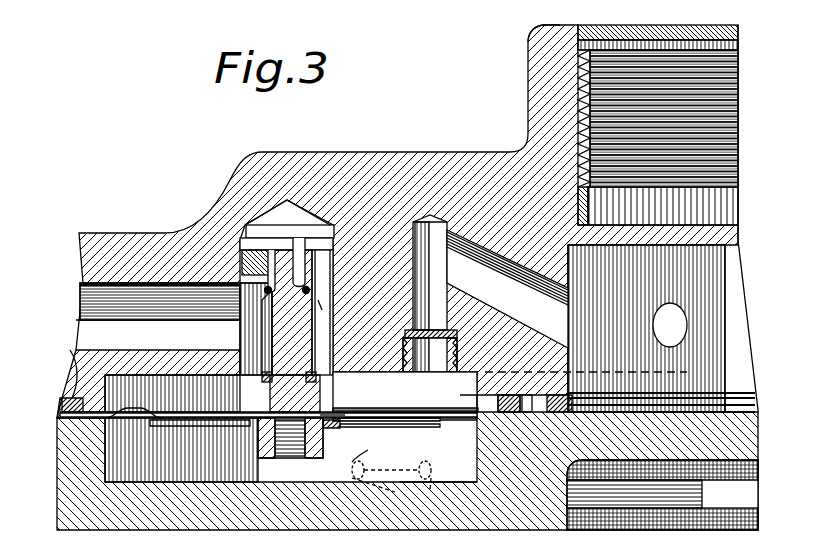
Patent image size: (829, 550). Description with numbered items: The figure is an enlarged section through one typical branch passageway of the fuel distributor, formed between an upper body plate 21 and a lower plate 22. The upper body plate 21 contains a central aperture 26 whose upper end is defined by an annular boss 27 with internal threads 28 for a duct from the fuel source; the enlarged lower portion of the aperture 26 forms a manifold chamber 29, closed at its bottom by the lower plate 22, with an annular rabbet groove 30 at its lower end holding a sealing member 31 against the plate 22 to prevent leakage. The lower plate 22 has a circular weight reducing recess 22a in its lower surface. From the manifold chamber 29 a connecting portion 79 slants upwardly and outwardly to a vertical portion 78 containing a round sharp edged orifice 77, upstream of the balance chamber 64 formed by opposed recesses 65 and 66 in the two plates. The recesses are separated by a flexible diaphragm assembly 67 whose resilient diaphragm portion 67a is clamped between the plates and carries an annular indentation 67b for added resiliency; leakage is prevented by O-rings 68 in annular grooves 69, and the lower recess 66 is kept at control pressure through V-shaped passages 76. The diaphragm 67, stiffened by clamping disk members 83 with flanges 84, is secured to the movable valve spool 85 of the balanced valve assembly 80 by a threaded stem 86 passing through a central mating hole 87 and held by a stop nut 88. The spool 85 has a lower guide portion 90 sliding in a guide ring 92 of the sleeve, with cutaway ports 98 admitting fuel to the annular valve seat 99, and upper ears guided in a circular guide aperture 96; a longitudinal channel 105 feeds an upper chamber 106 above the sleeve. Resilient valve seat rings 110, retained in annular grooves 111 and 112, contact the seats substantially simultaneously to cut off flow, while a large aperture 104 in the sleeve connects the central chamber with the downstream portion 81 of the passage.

The upper body plate 21 is at (428, 152).
The lower plate 22 is at (412, 520).
The weight reducing recess 22a is at (742, 490).
The central aperture 26 is at (705, 60).
The annular boss 27 is at (528, 44).
The internal threads 28 is at (720, 90).
The manifold chamber 29 is at (738, 326).
The annular rabbet groove 30 is at (733, 395).
The lower sealing ring 31 is at (740, 406).
The diaphragm or balance chamber 64 is at (453, 490).
The upper balance chamber recess 65 is at (405, 391).
The lower balance chamber recess 66 is at (358, 452).
The flexible diaphragm assembly 67 is at (178, 422).
The resilient diaphragm portion 67a is at (460, 395).
The annular indentation 67b is at (452, 414).
The O-ring 68 is at (60, 406).
The annular groove 69 is at (532, 395).
The connected downwardly extending passages 76 is at (365, 463).
The round sharp edged orifice 77 is at (438, 330).
The vertical portion of the branch passage 78 is at (435, 270).
The connecting portion 79 is at (520, 314).
The balanced valve assembly 80 is at (290, 223).
The downstream portion of the passage 81 is at (90, 340).
The rigid clamping disk member 83 is at (412, 408).
The stiffening flange 84 is at (430, 408).
The movable valve spool 85 is at (306, 240).
The externally threaded stem 86 is at (285, 458).
The central mating hole 87 is at (250, 433).
The stop nut 88 is at (268, 435).
The lower guide portion 90 is at (320, 385).
The integral guide ring 92 is at (335, 415).
The circular guide aperture 96 is at (286, 256).
The cutaway ports 98 is at (250, 380).
The annular valve seat 99 is at (313, 314).
The large aperture 104 is at (262, 320).
The longitudinal channel 105 is at (326, 306).
The upper chamber 106 is at (287, 200).
The valve seat ring 110 is at (255, 357).
The annular groove 111 is at (339, 432).
The annular groove 112 is at (303, 247).